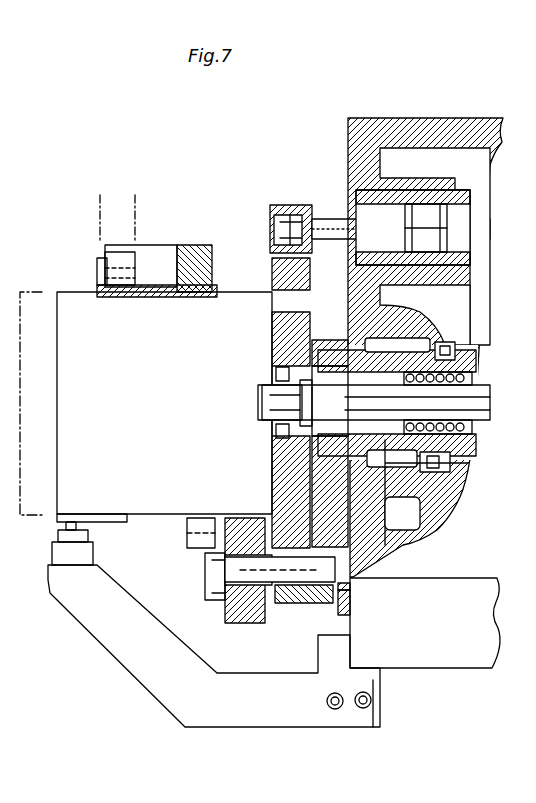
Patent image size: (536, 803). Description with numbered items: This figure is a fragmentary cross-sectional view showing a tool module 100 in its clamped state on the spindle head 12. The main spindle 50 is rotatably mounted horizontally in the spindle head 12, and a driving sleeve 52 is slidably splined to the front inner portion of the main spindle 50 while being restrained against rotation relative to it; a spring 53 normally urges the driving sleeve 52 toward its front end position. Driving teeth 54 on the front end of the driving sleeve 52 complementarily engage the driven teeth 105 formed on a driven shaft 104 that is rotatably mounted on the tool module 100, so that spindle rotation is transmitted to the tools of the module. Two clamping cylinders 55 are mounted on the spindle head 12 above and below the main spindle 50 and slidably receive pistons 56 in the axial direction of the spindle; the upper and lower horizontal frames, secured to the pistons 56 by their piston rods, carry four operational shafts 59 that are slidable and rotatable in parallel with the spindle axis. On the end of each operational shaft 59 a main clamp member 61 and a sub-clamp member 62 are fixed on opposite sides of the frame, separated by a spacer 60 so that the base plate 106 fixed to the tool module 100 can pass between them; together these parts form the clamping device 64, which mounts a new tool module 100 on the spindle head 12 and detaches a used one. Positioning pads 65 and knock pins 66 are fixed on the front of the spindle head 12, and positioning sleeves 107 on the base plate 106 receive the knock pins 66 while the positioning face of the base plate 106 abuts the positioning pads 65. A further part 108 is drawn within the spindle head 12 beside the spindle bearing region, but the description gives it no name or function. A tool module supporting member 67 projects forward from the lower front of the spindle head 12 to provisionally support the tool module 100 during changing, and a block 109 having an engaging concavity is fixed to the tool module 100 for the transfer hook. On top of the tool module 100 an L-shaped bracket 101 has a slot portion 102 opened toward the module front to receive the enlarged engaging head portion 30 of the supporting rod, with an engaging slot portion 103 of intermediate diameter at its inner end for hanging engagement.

The spindle head 12 is at (445, 662).
The enlarged engaging head portion 30 is at (80, 268).
The main spindle 50 is at (468, 372).
The driving sleeve 52 is at (285, 452).
The spring 53 is at (462, 425).
The driving teeth 54 is at (270, 418).
The clamping cylinder 55 is at (368, 180).
The piston 56 is at (438, 278).
The operational shaft 59 is at (205, 570).
The spacer 60 is at (285, 604).
The main clamp member 61 is at (225, 616).
The sub-clamp member 62 is at (350, 598).
The clamping device 64 is at (243, 632).
The positioning pad 65 is at (428, 527).
The knock pin 66 is at (272, 332).
The tool module supporting member 67 is at (70, 555).
The tool module 100 is at (156, 418).
The L-shaped bracket 101 is at (200, 246).
The slot portion 102 is at (155, 290).
The engaging slot portion 103 is at (176, 250).
The driven shaft 104 is at (262, 396).
The driven teeth 105 is at (276, 374).
The base plate 106 is at (272, 500).
The positioning sleeve 107 is at (272, 278).
The key 108 is at (390, 488).
The block 109 is at (187, 540).